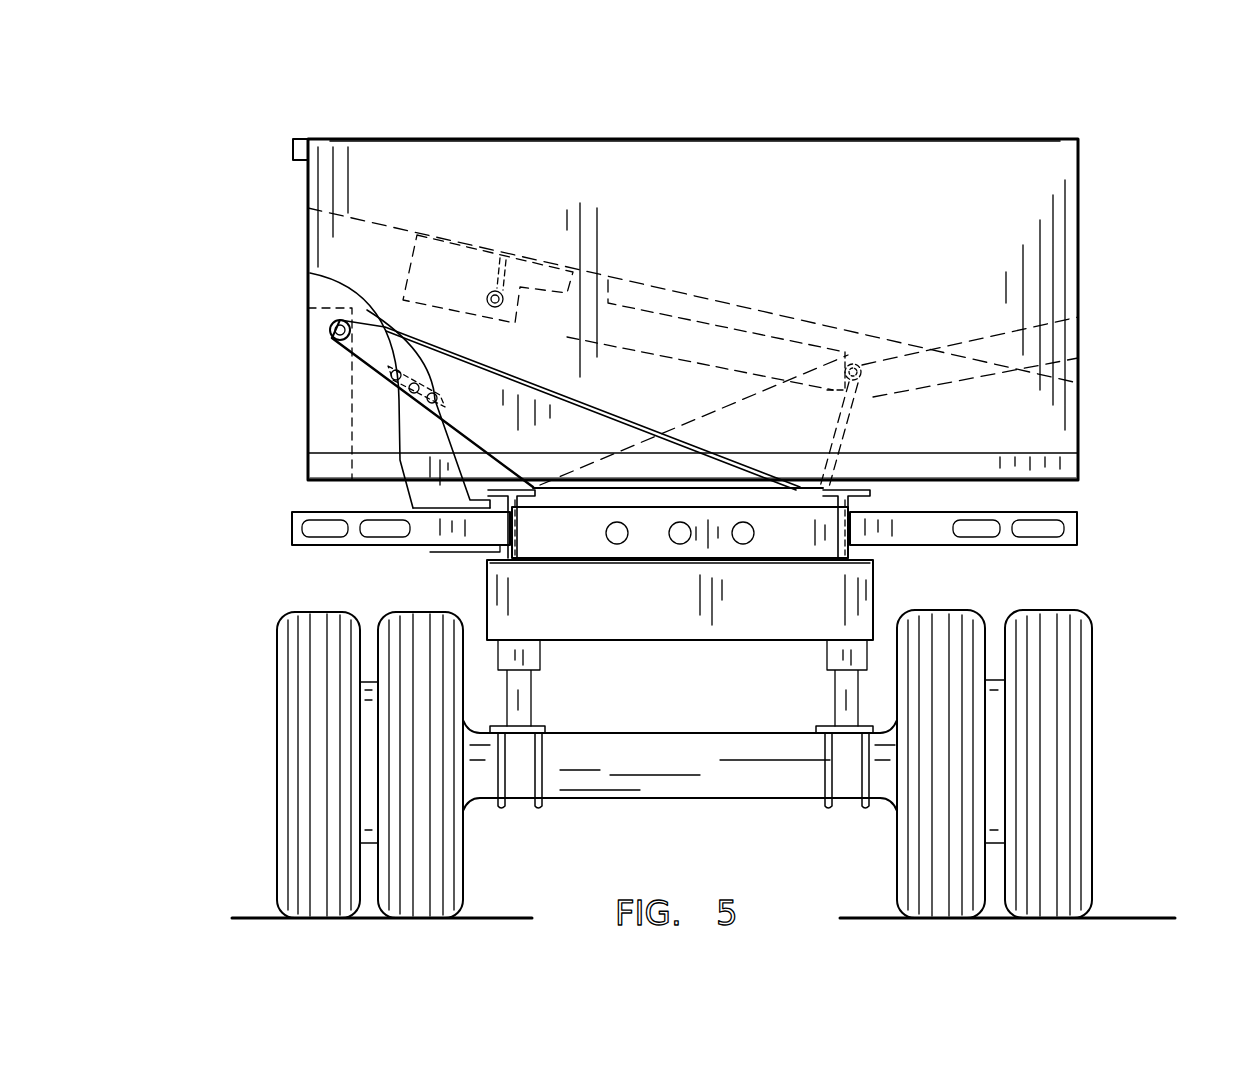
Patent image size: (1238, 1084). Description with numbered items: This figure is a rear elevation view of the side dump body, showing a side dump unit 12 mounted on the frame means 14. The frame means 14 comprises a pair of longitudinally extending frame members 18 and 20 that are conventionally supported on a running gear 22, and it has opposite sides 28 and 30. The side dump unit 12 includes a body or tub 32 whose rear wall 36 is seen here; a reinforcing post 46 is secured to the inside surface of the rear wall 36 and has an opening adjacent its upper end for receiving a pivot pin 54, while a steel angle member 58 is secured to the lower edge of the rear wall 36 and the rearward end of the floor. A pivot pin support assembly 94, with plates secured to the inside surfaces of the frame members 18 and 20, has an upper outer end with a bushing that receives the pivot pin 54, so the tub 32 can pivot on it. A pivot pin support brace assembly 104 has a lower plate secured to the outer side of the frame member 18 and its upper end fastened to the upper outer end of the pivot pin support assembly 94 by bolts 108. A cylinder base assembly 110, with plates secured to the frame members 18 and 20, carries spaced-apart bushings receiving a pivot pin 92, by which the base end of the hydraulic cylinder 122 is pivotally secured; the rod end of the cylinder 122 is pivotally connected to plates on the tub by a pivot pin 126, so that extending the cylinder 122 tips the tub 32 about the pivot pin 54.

The side dump unit 12 is at (1102, 167).
The frame means 14 is at (432, 565).
The frame member 18 is at (507, 502).
The frame member 20 is at (873, 492).
The running gear 22 is at (1102, 712).
The side of frame means 28 is at (182, 460).
The side of frame means 30 is at (1112, 464).
The body or tub 32 is at (752, 133).
The rear wall 36 is at (845, 232).
The reinforcing post 46 is at (325, 385).
The pivot pin 54 is at (330, 330).
The steel angle member 58 is at (980, 460).
The pivot pin 92 is at (1078, 317).
The pivot pin support assembly 94 is at (574, 432).
The pivot pin support brace assembly 104 is at (406, 461).
The bolts 108 is at (310, 273).
The cylinder base assembly 110 is at (1078, 358).
The hydraulic cylinder 122 is at (695, 330).
The pivot pin 126 is at (492, 292).